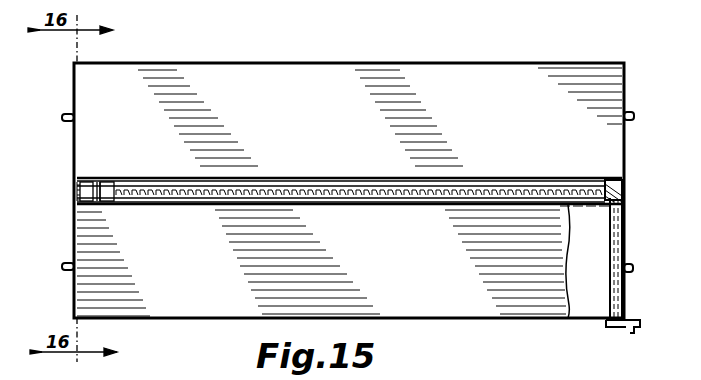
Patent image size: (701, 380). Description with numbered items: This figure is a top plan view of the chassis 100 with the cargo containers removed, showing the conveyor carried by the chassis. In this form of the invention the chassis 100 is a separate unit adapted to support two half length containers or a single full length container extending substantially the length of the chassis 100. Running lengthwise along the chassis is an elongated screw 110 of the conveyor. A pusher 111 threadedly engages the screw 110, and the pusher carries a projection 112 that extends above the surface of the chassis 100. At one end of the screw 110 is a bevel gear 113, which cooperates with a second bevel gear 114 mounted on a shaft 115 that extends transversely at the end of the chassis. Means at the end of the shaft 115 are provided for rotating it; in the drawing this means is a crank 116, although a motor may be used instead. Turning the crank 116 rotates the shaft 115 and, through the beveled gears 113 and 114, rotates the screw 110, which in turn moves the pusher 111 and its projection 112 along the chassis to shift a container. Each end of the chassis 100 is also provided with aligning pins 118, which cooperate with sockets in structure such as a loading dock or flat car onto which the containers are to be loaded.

The chassis 100 is at (349, 190).
The elongated screw 110 is at (562, 178).
The pusher 111 is at (107, 198).
The projection 112 is at (97, 183).
The bevel gear 113 is at (614, 181).
The bevel gear 114 is at (615, 193).
The shaft 115 is at (614, 260).
The crank 116 is at (630, 334).
The aligning pins 118 is at (64, 120).